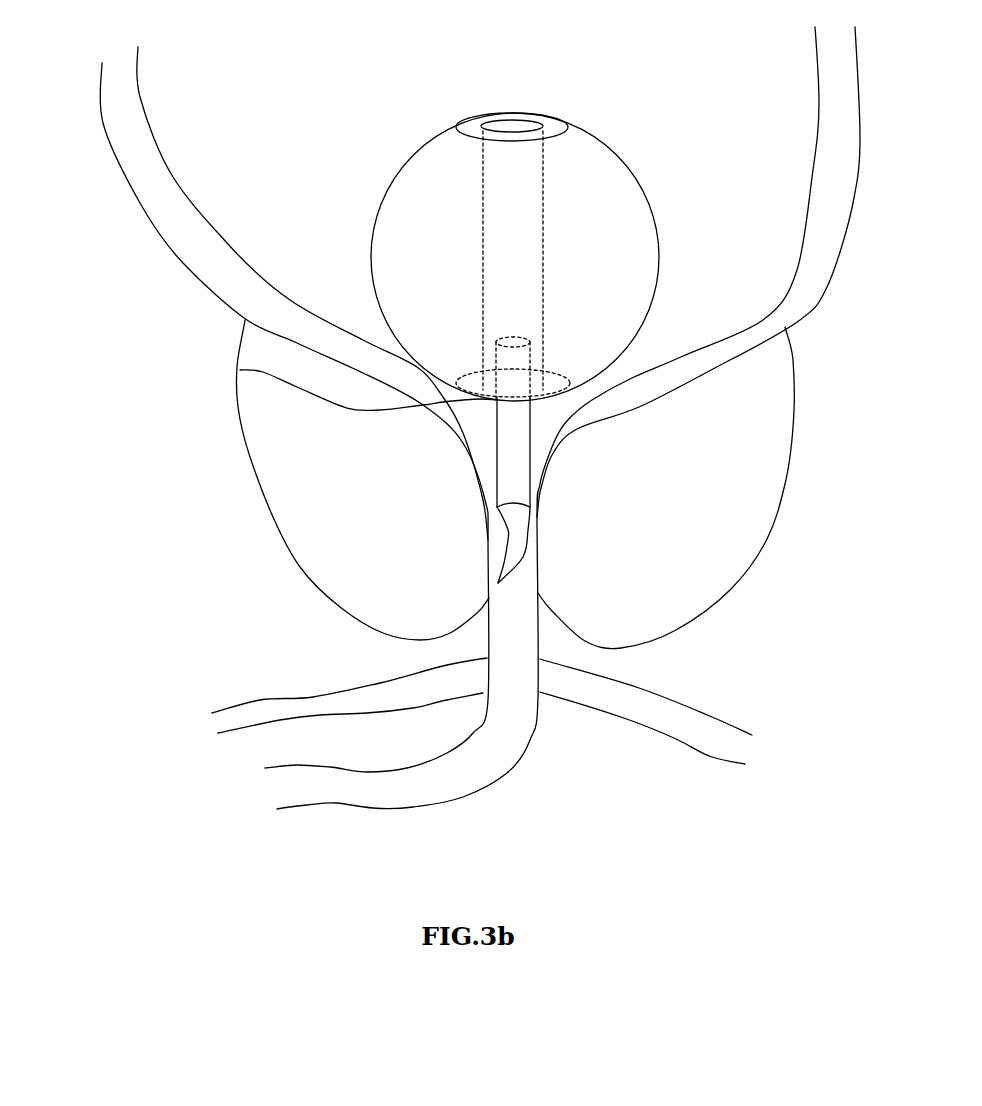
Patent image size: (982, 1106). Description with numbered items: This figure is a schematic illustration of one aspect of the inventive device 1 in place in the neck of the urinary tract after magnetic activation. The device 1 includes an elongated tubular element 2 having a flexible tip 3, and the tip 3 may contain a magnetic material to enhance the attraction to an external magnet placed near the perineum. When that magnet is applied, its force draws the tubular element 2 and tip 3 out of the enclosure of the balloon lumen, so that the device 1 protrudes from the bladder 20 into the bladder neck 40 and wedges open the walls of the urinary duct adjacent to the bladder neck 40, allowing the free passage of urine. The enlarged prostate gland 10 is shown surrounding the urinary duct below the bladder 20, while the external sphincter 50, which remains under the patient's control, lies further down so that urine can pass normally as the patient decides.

The device 1 is at (383, 175).
The elongated tubular element 2 is at (507, 437).
The flexible tip 3 is at (522, 532).
The prostate gland 10 is at (292, 512).
The bladder 20 is at (223, 200).
The bladder neck 40 is at (240, 370).
The external sphincter 50 is at (260, 702).